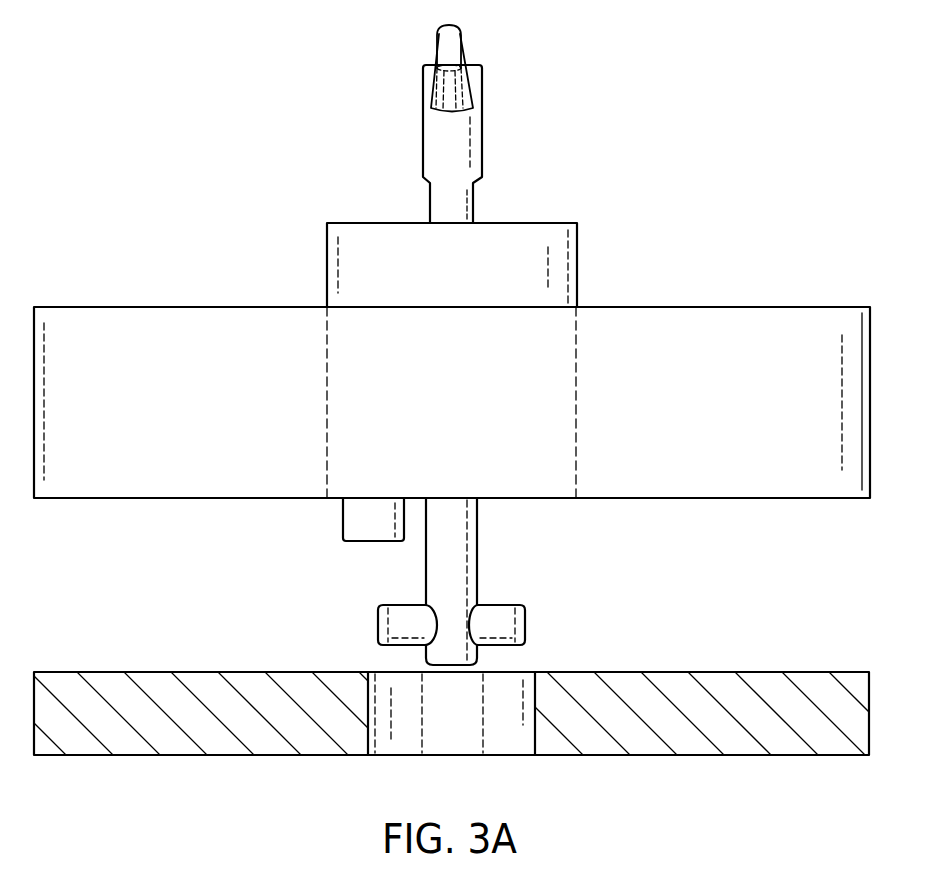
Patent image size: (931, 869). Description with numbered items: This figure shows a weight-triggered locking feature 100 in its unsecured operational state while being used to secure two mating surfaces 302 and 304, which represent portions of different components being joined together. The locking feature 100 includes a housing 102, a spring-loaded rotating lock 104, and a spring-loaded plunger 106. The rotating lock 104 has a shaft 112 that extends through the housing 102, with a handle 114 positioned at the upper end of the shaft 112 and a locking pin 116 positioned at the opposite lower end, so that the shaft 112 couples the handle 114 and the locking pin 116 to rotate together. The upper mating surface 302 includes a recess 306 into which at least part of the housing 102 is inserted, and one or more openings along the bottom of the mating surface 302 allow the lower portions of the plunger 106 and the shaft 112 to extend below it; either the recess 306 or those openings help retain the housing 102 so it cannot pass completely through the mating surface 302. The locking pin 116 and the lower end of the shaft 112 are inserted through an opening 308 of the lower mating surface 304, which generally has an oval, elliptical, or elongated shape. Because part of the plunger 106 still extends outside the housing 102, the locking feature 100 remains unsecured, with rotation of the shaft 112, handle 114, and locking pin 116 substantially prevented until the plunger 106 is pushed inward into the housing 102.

The locking feature 100 is at (526, 176).
The housing 102 is at (578, 263).
The spring-loaded rotating lock 104 is at (390, 134).
The spring-loaded plunger 106 is at (342, 519).
The shaft 112 is at (478, 540).
The handle 114 is at (415, 46).
The locking pin 116 is at (525, 625).
The mating surface 302 is at (750, 306).
The mating surface 304 is at (757, 671).
The recess 306 is at (330, 375).
The opening 308 is at (532, 733).